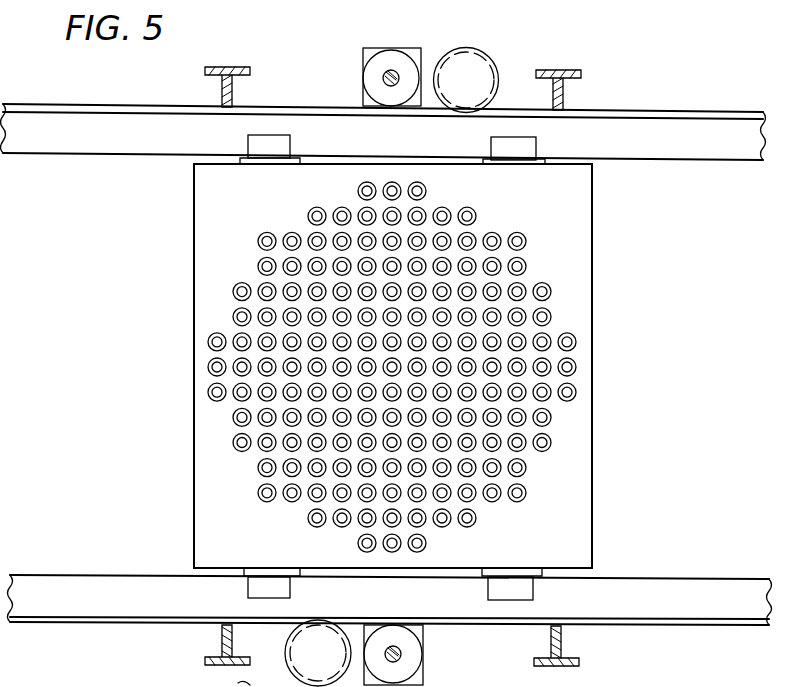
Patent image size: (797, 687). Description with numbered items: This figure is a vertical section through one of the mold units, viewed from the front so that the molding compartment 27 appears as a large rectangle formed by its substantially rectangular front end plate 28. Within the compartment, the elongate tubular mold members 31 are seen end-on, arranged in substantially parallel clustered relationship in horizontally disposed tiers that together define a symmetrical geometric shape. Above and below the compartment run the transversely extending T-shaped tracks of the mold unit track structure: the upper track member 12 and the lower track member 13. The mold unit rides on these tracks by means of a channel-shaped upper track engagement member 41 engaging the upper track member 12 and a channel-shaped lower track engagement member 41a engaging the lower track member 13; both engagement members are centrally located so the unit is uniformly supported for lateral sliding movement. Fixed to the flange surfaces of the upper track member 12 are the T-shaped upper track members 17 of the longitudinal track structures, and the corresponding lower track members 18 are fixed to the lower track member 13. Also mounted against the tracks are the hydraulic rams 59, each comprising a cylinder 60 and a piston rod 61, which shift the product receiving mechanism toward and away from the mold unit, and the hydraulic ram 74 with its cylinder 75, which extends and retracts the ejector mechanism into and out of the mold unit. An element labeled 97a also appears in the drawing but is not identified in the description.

The upper track member 12 is at (110, 147).
The lower track member 13 is at (95, 591).
The upper track member 17 is at (224, 88).
The lower track member 18 is at (224, 640).
The molding compartment 27 is at (596, 452).
The front end plate 28 is at (363, 367).
The tubular mold member 31 is at (477, 216).
The upper track engagement member 41 is at (258, 143).
The lower track engagement member 41a is at (248, 590).
The hydraulic ram 59 is at (375, 46).
The cylinder 60 is at (380, 62).
The piston rod 61 is at (383, 80).
The hydraulic ram 74 is at (487, 24).
The cylinder 75 is at (494, 56).
The guide 97a is at (223, 676).